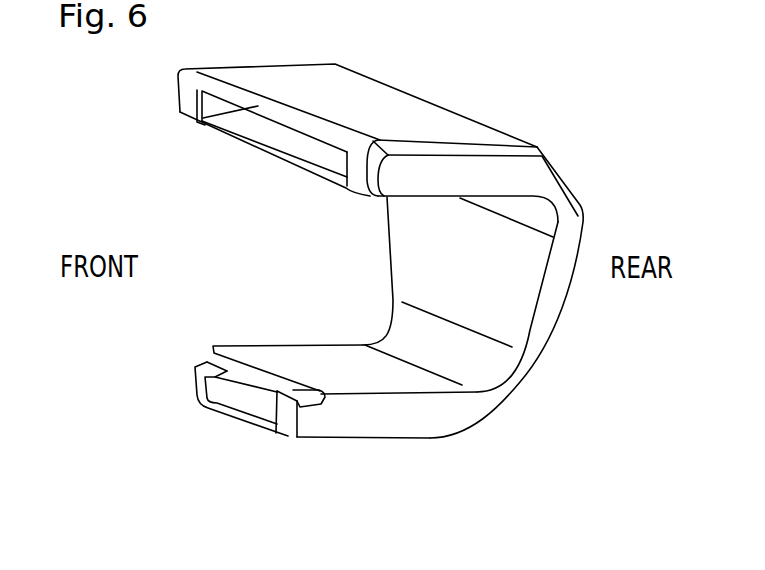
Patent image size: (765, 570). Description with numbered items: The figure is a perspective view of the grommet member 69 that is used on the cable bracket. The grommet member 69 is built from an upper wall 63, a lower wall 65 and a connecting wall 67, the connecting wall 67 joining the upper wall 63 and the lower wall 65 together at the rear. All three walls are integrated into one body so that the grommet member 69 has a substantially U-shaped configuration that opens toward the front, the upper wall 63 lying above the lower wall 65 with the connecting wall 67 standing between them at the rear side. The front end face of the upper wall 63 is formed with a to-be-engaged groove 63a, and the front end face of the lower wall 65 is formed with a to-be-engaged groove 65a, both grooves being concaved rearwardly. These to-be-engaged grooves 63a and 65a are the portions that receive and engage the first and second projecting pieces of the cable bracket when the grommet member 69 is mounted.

The upper wall 63 is at (377, 105).
The to-be-engaged groove 63a is at (257, 132).
The lower wall 65 is at (369, 415).
The to-be-engaged groove 65a is at (220, 378).
The connecting wall 67 is at (545, 302).
The grommet member 69 is at (553, 118).